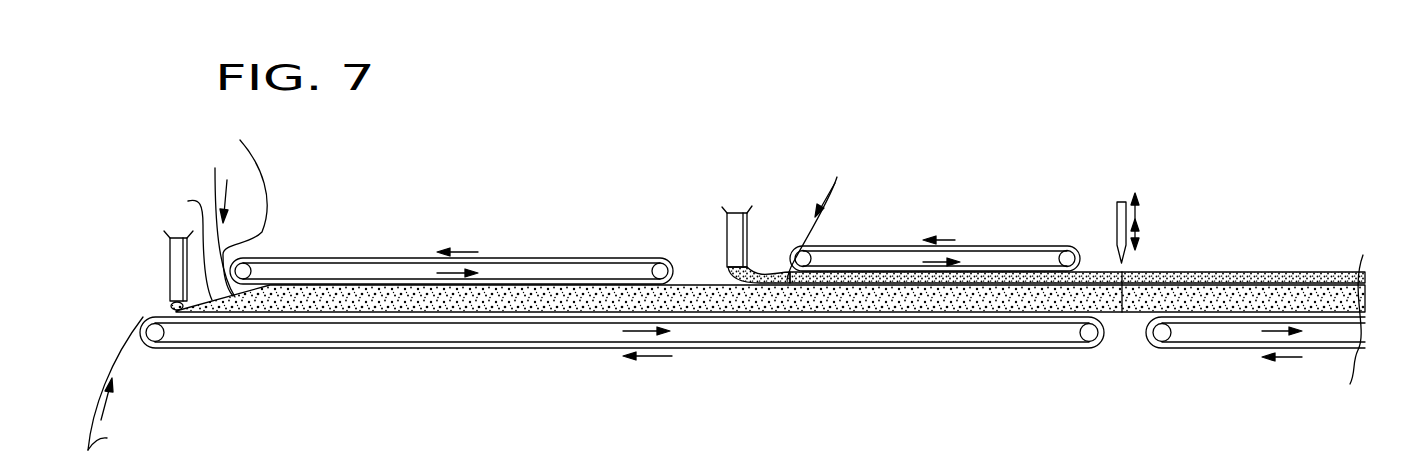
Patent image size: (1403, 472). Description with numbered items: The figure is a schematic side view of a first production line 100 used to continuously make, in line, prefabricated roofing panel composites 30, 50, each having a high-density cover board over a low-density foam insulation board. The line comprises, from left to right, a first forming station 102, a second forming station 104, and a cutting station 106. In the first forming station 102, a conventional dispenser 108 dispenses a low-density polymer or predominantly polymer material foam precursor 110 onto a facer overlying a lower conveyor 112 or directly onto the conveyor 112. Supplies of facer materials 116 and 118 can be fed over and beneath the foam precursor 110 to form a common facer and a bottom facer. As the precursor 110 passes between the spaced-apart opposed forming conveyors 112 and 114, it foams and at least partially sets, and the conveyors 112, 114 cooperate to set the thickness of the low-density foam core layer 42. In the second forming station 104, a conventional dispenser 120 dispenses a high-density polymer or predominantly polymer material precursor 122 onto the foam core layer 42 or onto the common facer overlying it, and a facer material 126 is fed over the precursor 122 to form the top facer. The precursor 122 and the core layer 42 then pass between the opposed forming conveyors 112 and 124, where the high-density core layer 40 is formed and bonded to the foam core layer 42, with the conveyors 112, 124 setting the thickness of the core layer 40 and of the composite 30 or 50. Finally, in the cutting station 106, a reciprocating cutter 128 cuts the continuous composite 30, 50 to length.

The first production line 100 is at (1020, 98).
The first forming station 102 is at (395, 193).
The second forming station 104 is at (907, 197).
The cutting station 106 is at (1178, 210).
The dispenser 108 is at (170, 281).
The low-density polymer or predominantly polymer material foam precursor 110 is at (179, 243).
The conveyor 112 is at (475, 350).
The forming conveyor 114 is at (547, 258).
The facer material supply 116 is at (236, 163).
The facer material supply 118 is at (117, 352).
The dispenser 120 is at (724, 237).
The high-density polymer or predominantly polymer material precursor 122 is at (777, 273).
The forming conveyor 124 is at (977, 246).
The facer material 126 is at (832, 178).
The reciprocating cutter 128 is at (1117, 210).
The high-density polymer or predominantly polymer material core layer 40 is at (1090, 271).
The low-density polymer or predominantly polymer material foam core layer 42 is at (712, 310).
The prefabricated roofing panel composite 30 is at (1268, 231).
The prefabricated roofing panel composite 50 is at (1217, 257).